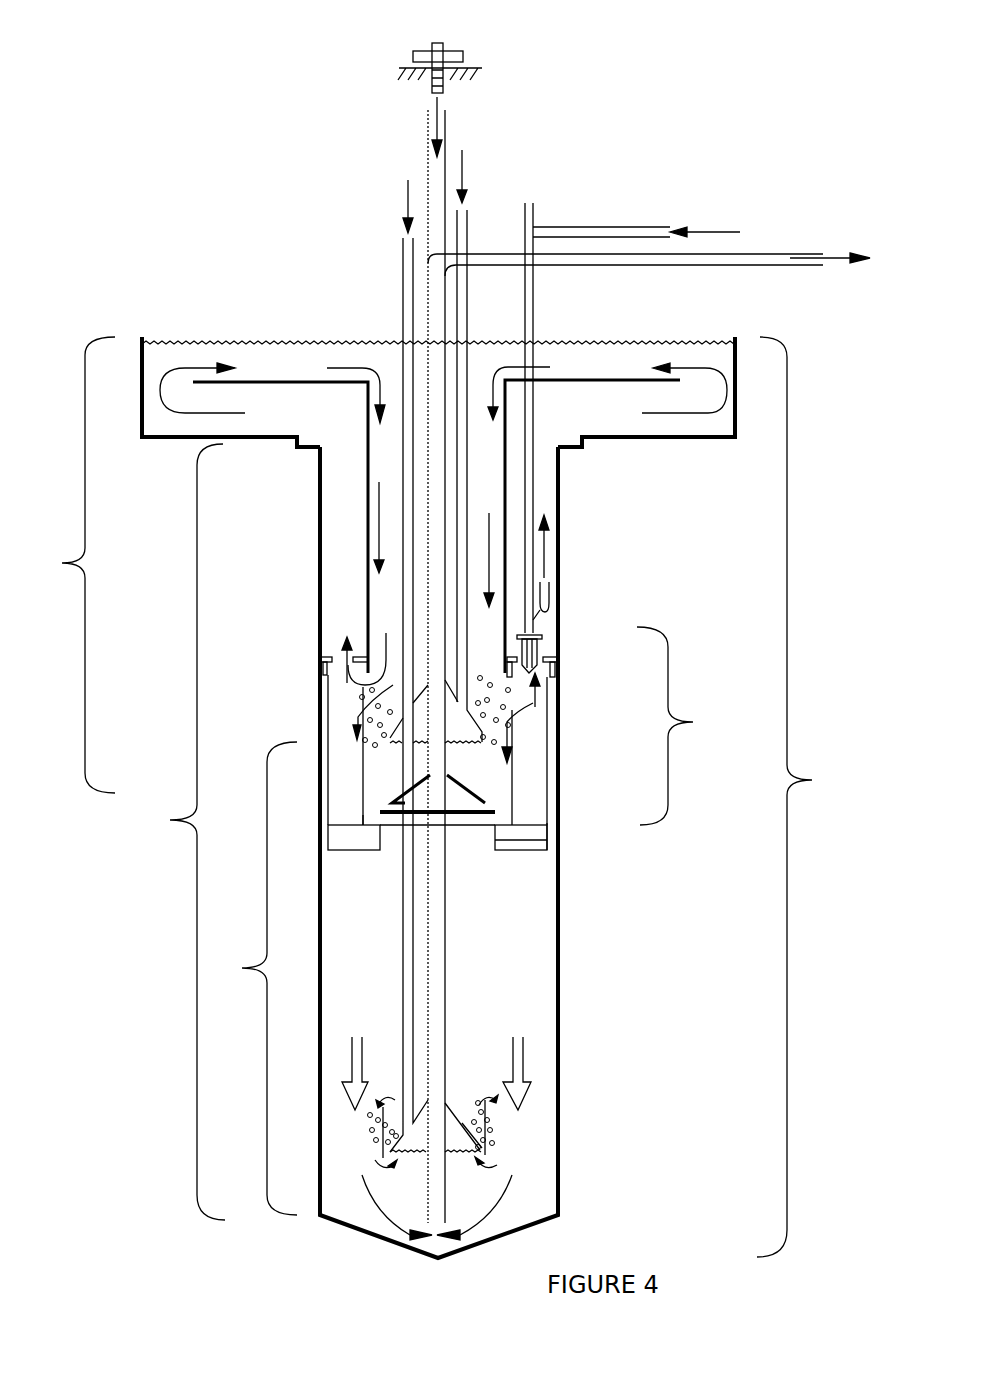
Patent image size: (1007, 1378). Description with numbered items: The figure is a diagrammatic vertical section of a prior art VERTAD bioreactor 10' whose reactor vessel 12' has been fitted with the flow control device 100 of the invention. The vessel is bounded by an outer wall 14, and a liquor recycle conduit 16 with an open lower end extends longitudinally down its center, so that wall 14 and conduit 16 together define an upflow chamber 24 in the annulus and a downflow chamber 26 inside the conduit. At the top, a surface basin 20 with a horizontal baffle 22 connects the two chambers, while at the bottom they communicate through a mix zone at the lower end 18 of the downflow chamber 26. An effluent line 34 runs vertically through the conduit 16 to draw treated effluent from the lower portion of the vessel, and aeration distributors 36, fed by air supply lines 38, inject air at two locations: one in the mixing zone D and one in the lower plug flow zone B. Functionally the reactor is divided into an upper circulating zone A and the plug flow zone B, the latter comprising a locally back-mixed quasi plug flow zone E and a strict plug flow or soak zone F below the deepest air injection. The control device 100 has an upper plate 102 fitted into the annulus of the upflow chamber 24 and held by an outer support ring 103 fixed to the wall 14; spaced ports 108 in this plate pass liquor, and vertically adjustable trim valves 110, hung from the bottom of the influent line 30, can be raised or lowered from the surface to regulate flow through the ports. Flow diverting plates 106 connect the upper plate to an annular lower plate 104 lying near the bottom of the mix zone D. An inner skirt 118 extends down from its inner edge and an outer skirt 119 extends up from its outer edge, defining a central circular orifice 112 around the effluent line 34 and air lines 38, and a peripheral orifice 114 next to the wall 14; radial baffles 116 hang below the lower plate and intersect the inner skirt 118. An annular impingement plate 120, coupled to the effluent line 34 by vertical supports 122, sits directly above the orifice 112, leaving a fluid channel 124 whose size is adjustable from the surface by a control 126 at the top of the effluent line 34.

The control 126 is at (440, 52).
The air supply lines 38 is at (436, 640).
The influent line 30 is at (533, 210).
The horizontal baffle 22 is at (610, 380).
The surface basin 20 is at (737, 340).
The liquor recycle conduit 16 is at (508, 503).
The downflow chamber 26 is at (500, 537).
The upflow chamber 24 is at (545, 550).
The lower end of downflow chamber 18 is at (380, 620).
The ports 108 is at (333, 653).
The trim valves 110 is at (537, 635).
The upper plate 102 is at (557, 650).
The outer support ring 103 is at (563, 663).
The aeration distributor 36 is at (470, 722).
The flow diverting plates 106 is at (530, 735).
The flow control device 100 is at (683, 726).
The vertical supports 122 is at (457, 800).
The impingement plate 120 is at (480, 805).
The outer skirt 119 is at (495, 813).
The fluid channel 124 is at (373, 818).
The radial baffles 116 is at (347, 838).
The inner skirt 118 is at (553, 853).
The peripheral orifice 114 is at (553, 823).
The lower plate 104 is at (497, 840).
The central circular orifice 112 is at (477, 822).
The outer wall 14 is at (558, 957).
The effluent line 34 is at (445, 1037).
The bioreactor 10' is at (798, 797).
The reactor vessel 12' is at (181, 832).
The upper circulating zone A is at (76, 565).
The lower plug flow zone B is at (257, 978).
The mixing zone D is at (343, 702).
The quasi plug flow zone E is at (436, 1102).
The soak zone F is at (437, 1207).